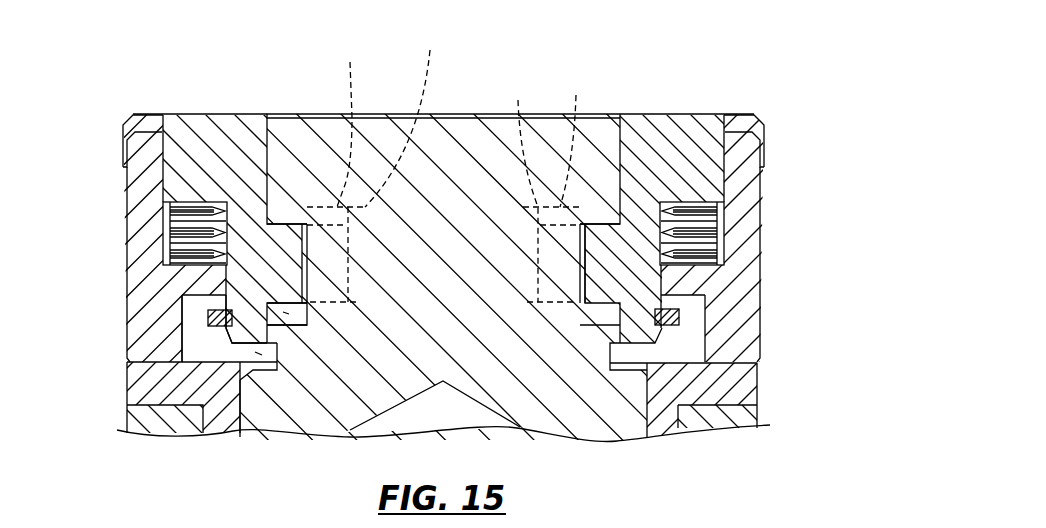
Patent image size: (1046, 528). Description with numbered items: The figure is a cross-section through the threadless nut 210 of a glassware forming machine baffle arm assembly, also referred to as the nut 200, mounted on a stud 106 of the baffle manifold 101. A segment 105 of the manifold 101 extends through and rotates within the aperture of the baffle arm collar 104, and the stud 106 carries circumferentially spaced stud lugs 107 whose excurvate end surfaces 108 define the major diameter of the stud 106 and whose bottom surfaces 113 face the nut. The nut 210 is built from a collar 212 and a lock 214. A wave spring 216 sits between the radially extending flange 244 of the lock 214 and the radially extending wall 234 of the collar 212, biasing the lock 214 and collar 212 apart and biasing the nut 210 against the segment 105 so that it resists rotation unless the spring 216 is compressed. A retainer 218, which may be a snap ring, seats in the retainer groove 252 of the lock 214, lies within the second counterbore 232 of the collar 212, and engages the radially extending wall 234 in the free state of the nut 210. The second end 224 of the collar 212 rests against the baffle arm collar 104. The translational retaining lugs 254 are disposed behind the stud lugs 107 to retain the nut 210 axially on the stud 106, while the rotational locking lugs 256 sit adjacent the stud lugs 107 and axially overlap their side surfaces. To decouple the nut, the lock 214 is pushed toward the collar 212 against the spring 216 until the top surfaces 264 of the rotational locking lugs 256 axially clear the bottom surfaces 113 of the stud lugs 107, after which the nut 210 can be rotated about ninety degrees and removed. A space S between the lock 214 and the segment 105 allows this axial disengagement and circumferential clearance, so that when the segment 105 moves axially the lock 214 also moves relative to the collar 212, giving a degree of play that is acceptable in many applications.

The baffle holder manifold 101 is at (630, 437).
The collar 104 is at (147, 423).
The segment 105 is at (562, 367).
The stud 106 is at (458, 110).
The lugs 107 is at (287, 160).
The end surfaces 108 is at (268, 170).
The bottom surfaces 113 is at (283, 228).
The nut 200 is at (120, 62).
The threadless nut 210 is at (812, 124).
The collar 212 is at (104, 250).
The lock 214 is at (146, 101).
The spring 216 is at (724, 222).
The retainer 218 is at (697, 315).
The second end 224 is at (730, 366).
The second counterbore 232 is at (197, 332).
The radially extending wall 234 is at (692, 278).
The radially extending flange 244 is at (697, 193).
The retainer groove 252 is at (663, 330).
The translational retaining lugs 254 is at (305, 272).
The rotational locking lugs 256 is at (443, 164).
The top surfaces 264 is at (454, 169).
The space s is at (258, 355).